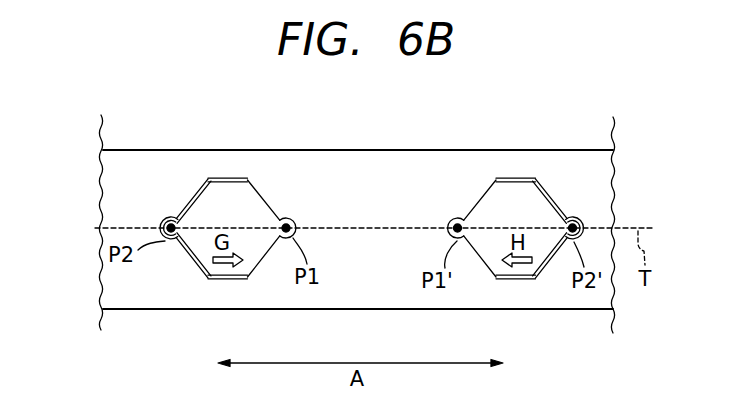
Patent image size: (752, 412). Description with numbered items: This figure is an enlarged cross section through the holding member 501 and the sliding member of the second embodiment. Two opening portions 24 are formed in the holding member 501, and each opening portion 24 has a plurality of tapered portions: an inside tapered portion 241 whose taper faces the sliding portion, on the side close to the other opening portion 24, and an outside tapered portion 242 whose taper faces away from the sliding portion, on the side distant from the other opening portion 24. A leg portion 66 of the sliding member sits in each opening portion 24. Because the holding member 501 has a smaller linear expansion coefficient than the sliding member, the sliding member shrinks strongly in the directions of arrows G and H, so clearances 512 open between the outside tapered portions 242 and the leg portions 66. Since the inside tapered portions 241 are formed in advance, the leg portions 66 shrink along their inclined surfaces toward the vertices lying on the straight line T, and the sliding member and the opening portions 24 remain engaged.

The opening portion 24 is at (358, 228).
The leg portion 66 is at (208, 212).
The inside tapered portion 241 is at (264, 200).
The outside tapered portion 242 is at (178, 208).
The holding member 501 is at (370, 166).
The clearance 512 is at (197, 196).